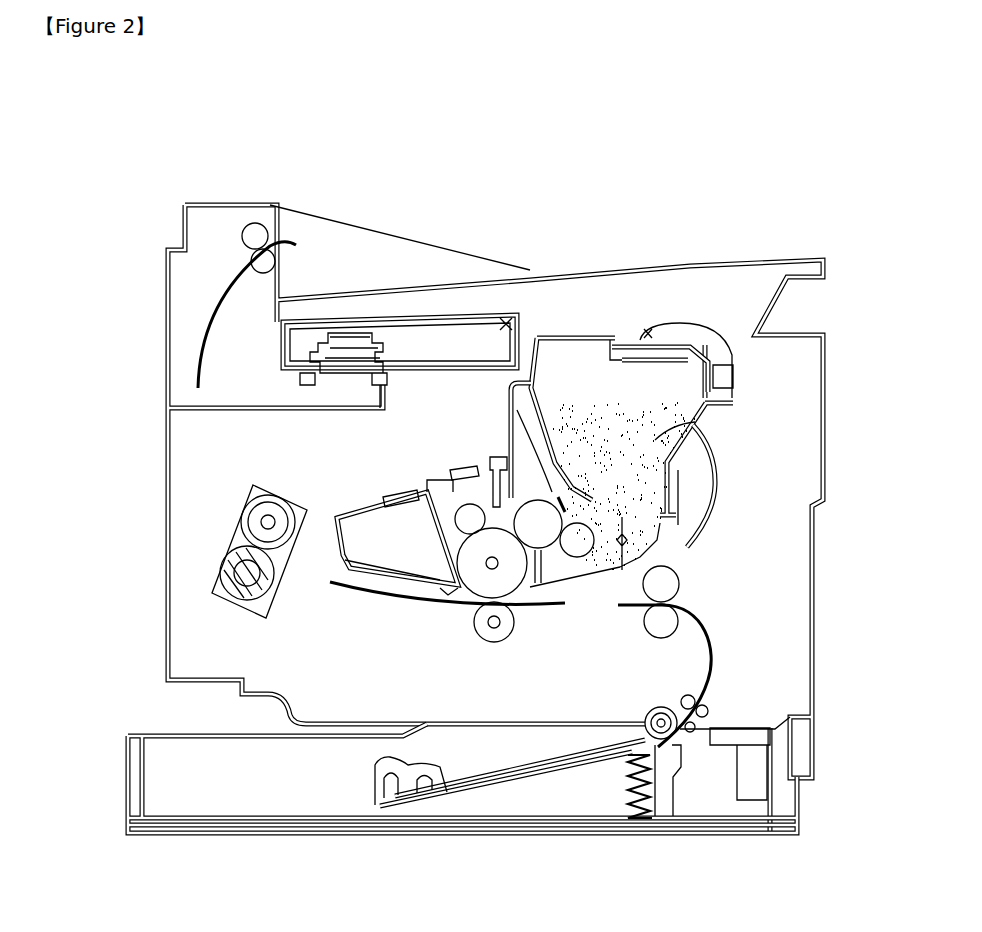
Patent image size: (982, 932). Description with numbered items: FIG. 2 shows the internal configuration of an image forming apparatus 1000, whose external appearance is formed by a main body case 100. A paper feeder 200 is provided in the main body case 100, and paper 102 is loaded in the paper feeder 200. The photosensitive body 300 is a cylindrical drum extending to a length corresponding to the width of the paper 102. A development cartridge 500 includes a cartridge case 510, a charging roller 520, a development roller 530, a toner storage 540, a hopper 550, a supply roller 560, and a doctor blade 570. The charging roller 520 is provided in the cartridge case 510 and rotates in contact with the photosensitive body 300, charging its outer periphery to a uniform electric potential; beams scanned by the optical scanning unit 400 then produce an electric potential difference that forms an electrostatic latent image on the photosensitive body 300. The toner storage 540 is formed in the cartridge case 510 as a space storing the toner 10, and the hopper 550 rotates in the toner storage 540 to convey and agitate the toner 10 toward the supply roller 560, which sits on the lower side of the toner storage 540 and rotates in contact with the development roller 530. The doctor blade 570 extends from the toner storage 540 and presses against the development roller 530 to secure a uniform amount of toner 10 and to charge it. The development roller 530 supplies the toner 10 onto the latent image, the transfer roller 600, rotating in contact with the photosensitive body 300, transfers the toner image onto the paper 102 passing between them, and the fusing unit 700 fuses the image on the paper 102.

The image forming apparatus 1000 is at (523, 131).
The main body case 100 is at (823, 426).
The paper 102 is at (216, 284).
The paper feeder 200 is at (627, 846).
The photosensitive body 300 is at (473, 588).
The optical scanning unit 400 is at (278, 352).
The development cartridge 500 is at (708, 322).
The cartridge case 510 is at (577, 340).
The charging roller 520 is at (460, 468).
The development roller 530 is at (523, 573).
The toner storage 540 is at (615, 367).
The hopper 550 is at (613, 570).
The supply roller 560 is at (570, 573).
The doctor blade 570 is at (517, 419).
The transfer roller 600 is at (494, 642).
The fusing unit 700 is at (234, 531).
The toner 10 is at (712, 409).